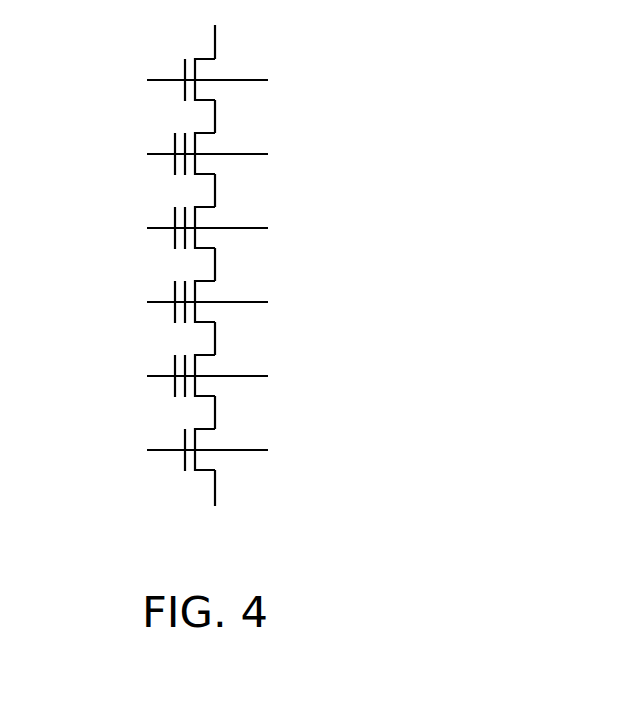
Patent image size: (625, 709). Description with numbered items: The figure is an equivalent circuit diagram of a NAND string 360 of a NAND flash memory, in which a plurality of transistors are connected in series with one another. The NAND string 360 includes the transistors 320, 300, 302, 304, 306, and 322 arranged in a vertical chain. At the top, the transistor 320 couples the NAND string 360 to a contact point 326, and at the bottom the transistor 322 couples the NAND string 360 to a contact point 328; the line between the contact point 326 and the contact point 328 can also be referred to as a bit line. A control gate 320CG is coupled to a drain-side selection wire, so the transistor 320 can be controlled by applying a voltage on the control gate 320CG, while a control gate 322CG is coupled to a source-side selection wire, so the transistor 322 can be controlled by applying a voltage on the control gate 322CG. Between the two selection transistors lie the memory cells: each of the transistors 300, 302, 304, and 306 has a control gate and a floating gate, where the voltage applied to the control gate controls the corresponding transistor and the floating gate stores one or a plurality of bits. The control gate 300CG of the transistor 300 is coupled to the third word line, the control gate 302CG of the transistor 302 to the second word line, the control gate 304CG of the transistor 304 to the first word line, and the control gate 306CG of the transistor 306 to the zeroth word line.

The contact point 326 is at (215, 43).
The transistor 320 is at (213, 71).
The control gate 320CG is at (185, 80).
The transistor 300 is at (213, 145).
The control gate 300CG is at (175, 154).
The transistor 302 is at (213, 219).
The control gate 302CG is at (175, 228).
The transistor 304 is at (213, 293).
The control gate 304CG is at (175, 302).
The transistor 306 is at (213, 367).
The control gate 306CG is at (175, 376).
The transistor 322 is at (213, 441).
The control gate 322CG is at (185, 450).
The contact point 328 is at (215, 488).
The NAND string 360 is at (386, 551).